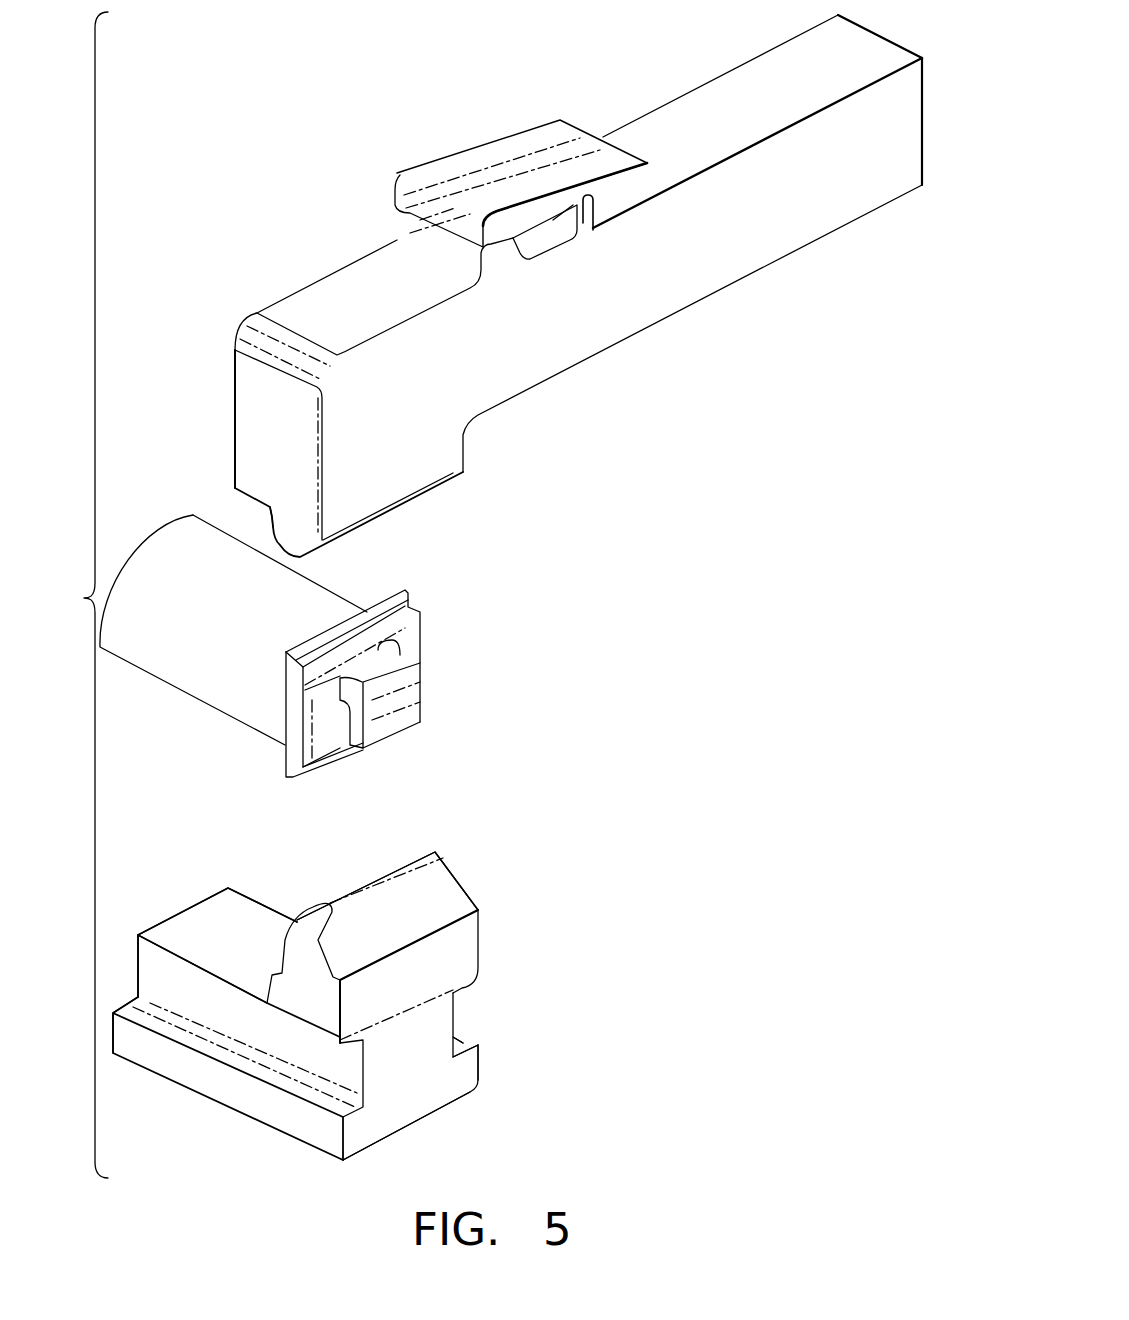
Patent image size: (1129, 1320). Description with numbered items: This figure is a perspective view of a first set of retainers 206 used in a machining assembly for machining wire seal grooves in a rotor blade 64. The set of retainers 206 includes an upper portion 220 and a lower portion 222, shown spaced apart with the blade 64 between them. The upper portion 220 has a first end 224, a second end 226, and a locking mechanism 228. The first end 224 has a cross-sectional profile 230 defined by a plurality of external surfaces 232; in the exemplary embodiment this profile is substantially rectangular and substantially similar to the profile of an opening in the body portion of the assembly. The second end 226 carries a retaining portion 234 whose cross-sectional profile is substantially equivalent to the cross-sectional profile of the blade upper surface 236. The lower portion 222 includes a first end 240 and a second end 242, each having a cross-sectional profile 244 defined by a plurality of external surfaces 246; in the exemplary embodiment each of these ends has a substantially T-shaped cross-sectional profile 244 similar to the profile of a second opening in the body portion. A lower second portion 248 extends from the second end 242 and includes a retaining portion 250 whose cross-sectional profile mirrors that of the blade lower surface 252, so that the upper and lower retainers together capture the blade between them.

The first set of retainers 206 is at (60, 596).
The upper portion 220 is at (748, 229).
The lower portion 222 is at (428, 991).
The first end 224 is at (905, 42).
The second end 226 is at (258, 393).
The locking mechanism 228 is at (445, 163).
The cross-sectional profile 230 is at (922, 140).
The external surfaces 232 is at (812, 42).
The retaining portion 234 is at (268, 510).
The blade upper surface 236 is at (395, 658).
The blade 64 is at (200, 702).
The blade lower surface 252 is at (357, 750).
The first end 240 is at (193, 900).
The second end 242 is at (462, 1078).
The cross-sectional profile 244 is at (395, 1118).
The external surfaces 246 is at (137, 1005).
The lower second portion 248 is at (458, 900).
The retaining portion 250 is at (283, 946).